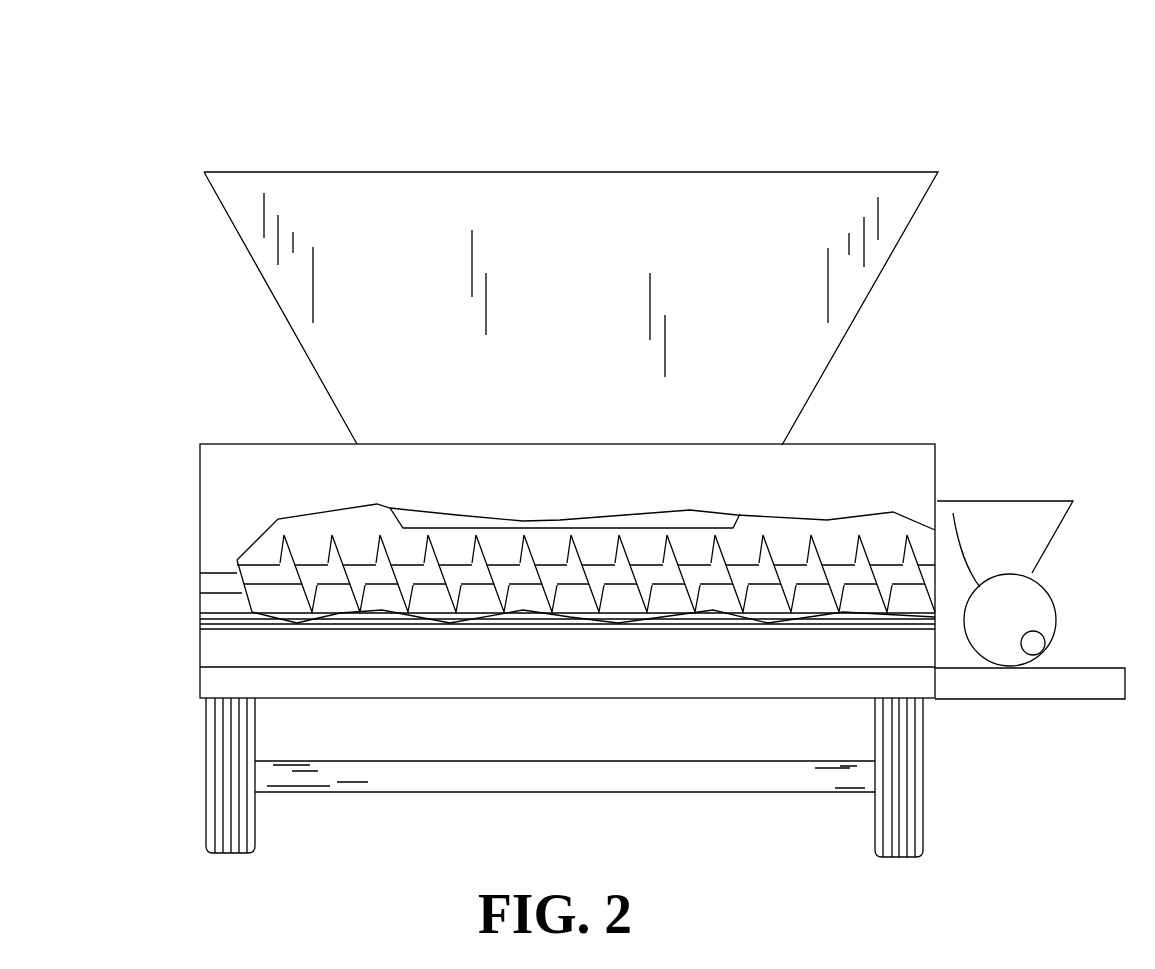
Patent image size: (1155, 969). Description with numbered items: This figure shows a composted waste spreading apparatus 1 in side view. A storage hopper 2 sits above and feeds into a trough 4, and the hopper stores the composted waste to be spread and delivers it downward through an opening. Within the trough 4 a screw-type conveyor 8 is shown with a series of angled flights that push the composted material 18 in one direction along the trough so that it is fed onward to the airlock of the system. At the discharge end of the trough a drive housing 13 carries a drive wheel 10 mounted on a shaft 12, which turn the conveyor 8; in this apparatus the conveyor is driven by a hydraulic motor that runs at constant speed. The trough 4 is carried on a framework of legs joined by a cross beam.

The feeding apparatus 1 is at (573, 147).
The hopper 2 is at (740, 172).
The trough 4 is at (438, 521).
The auger 8 is at (765, 547).
The material in trough 18 is at (775, 480).
The drive housing 13 is at (953, 513).
The drive wheel 10 is at (1048, 579).
The drive shaft 12 is at (1038, 637).